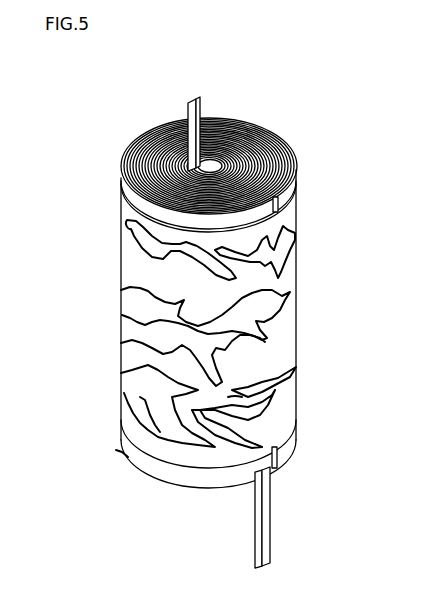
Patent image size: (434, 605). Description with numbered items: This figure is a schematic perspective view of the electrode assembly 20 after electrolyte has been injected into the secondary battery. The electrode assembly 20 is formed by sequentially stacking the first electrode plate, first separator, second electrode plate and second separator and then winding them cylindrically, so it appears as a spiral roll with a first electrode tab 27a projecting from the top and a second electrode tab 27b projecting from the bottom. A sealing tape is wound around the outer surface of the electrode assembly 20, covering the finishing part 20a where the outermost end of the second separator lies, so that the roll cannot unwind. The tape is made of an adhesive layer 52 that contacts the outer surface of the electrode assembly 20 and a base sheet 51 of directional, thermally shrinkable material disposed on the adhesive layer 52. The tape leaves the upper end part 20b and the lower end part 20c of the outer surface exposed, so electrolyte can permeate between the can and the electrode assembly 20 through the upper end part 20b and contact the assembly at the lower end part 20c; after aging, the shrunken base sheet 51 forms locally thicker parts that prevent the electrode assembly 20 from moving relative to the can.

The electrode assembly 20 is at (214, 281).
The finishing part 20a is at (264, 185).
The upper end part 20b is at (130, 192).
The lower end part 20c is at (130, 452).
The first electrode tab 27a is at (196, 104).
The second electrode tab 27b is at (265, 518).
The base sheet 51 is at (227, 338).
The adhesive layer 52 is at (287, 312).